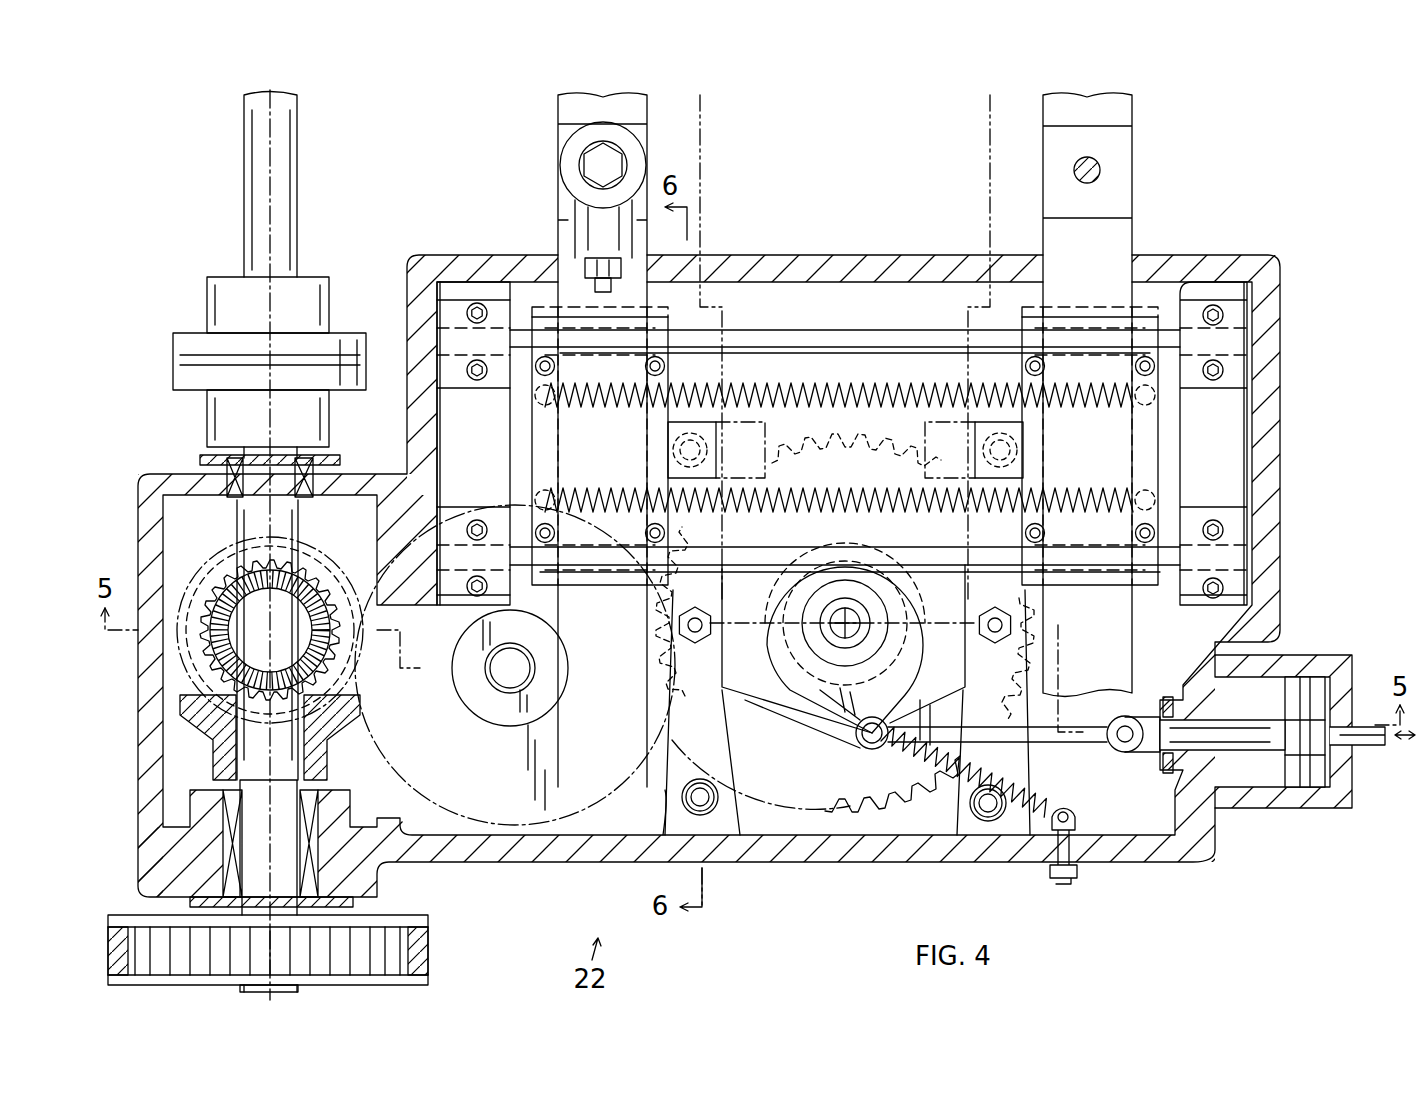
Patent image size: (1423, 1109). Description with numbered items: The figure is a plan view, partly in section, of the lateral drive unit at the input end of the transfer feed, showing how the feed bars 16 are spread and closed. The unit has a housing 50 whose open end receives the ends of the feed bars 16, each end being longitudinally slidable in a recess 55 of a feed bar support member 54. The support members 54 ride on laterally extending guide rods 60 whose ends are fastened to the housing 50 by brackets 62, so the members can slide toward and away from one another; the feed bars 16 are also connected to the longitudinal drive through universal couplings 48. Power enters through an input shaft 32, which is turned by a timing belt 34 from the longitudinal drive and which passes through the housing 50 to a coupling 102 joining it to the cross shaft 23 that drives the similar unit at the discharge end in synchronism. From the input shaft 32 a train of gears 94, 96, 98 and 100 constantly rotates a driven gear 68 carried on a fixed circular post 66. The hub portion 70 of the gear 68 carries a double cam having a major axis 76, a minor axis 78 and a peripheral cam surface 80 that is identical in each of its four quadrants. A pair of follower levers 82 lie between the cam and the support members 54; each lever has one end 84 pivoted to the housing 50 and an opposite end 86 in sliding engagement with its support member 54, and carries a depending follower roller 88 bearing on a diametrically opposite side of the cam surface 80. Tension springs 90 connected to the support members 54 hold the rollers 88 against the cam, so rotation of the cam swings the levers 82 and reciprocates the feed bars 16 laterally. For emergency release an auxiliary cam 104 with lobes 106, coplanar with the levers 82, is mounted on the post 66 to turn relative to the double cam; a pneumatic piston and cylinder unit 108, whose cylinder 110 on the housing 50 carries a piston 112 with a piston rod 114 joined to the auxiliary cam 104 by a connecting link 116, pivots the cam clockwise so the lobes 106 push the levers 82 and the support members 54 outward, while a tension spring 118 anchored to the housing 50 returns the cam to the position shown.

The feed bars 16 is at (562, 112).
The cross shaft 23 is at (292, 168).
The input shaft 32 is at (282, 990).
The timing belt 34 is at (430, 948).
The universal couplings 48 is at (563, 167).
The housing 50 is at (808, 862).
The feed bar support members 54 is at (535, 440).
The recess 55 is at (545, 412).
The guide rods 60 is at (822, 340).
The bracket 62 is at (458, 308).
The circular post 66 is at (880, 614).
The driven gear 68 is at (775, 800).
The hub portion 70 is at (900, 650).
The major axis 76 is at (756, 625).
The minor axis 78 is at (850, 522).
The peripheral cam surface 80 is at (794, 730).
The follower levers 82 is at (665, 775).
The lever end 84 is at (722, 805).
The lever end 86 is at (845, 450).
The follower rollers 88 is at (697, 645).
The tension springs 90 is at (888, 392).
The gear 94 is at (338, 720).
The gear 96 is at (322, 562).
The gear 98 is at (345, 588).
The gear 100 is at (410, 783).
The coupling 102 is at (191, 319).
The auxiliary cam 104 is at (812, 733).
The cam lobes 106 is at (932, 590).
The pneumatic piston and cylinder unit 108 is at (1327, 650).
The cylinder 110 is at (1298, 805).
The piston 112 is at (1292, 780).
The piston rod 114 is at (1262, 720).
The connecting link 116 is at (1032, 745).
The tension spring 118 is at (930, 787).